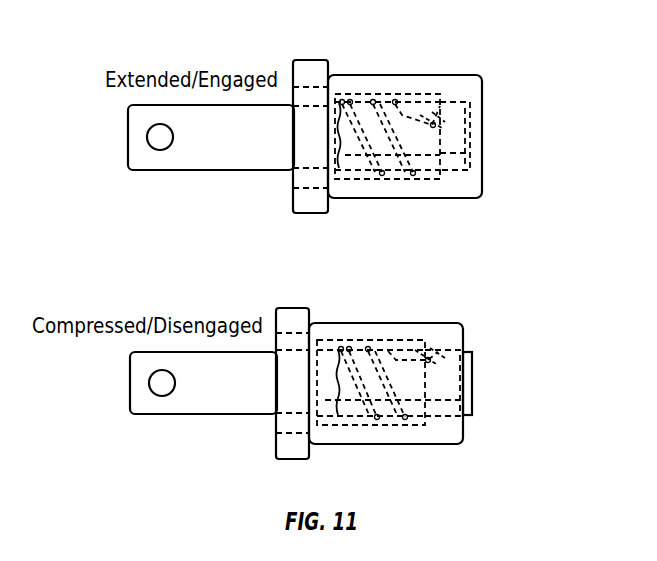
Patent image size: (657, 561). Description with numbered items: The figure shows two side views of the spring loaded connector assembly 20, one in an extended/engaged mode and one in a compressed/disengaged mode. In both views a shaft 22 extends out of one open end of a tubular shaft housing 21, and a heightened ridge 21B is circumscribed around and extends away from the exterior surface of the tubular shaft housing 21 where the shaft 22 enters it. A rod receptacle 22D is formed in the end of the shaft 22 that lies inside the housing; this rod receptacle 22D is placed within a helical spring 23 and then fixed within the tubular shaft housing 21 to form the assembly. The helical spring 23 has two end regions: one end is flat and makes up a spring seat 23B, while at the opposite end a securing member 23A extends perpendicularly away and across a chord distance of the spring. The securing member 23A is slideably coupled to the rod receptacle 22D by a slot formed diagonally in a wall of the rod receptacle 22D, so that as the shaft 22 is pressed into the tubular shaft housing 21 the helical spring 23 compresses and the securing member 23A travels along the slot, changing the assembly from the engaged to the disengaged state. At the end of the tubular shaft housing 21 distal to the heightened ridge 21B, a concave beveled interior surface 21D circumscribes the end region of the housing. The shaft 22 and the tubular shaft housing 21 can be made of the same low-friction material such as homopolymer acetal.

The spring loaded connector assembly 20 is at (161, 195).
The tubular shaft housing 21 is at (342, 57).
The heightened ridge 21B is at (310, 68).
The concave beveled interior surface 21D is at (470, 122).
The shaft 22 is at (250, 152).
The rod receptacle 22D is at (453, 141).
The helical spring 23 is at (398, 115).
The securing member 23A is at (443, 121).
The spring seat 23B is at (343, 165).